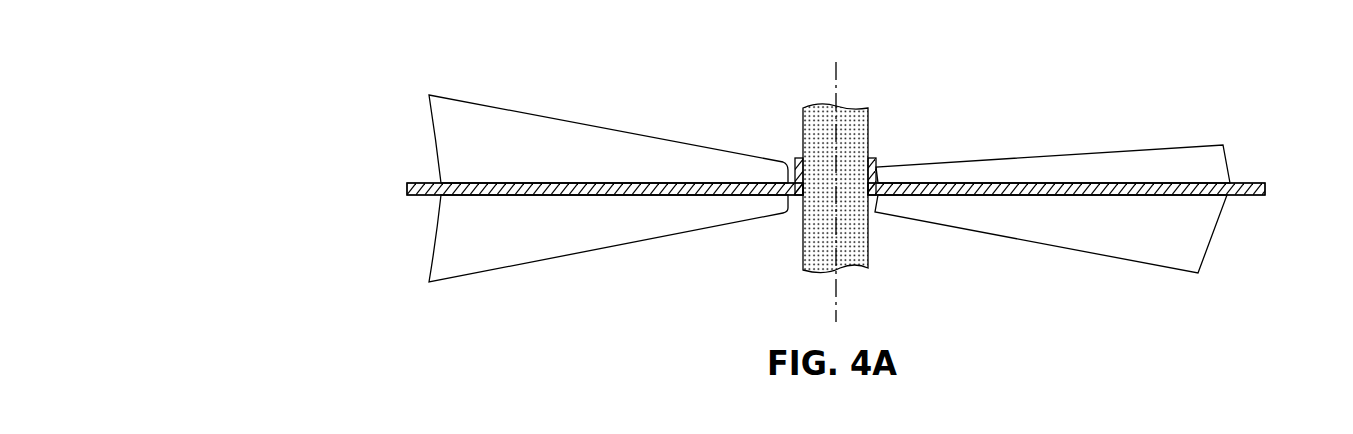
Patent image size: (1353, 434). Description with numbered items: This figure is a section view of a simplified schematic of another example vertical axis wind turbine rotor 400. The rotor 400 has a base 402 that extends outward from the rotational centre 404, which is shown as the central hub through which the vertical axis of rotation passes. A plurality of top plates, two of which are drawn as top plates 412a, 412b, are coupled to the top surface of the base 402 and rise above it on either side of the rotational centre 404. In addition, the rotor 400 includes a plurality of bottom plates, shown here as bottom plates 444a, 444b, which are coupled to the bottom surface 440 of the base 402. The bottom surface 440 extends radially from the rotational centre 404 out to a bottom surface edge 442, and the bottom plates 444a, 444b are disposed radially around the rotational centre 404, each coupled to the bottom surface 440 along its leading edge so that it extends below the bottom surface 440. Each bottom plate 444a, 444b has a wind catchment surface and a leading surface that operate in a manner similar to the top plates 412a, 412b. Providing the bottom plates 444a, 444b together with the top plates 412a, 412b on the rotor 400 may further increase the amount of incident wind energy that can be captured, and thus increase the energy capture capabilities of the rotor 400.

The vertical axis wind turbine rotor 400 is at (306, 43).
The base 402 is at (1265, 183).
The rotational centre 404 is at (845, 136).
The top plate 412a is at (677, 142).
The top plate 412b is at (1113, 150).
The bottom surface 440 is at (674, 205).
The bottom surface edge 442 is at (407, 195).
The bottom plate 444a is at (733, 223).
The bottom plate 444b is at (1133, 262).